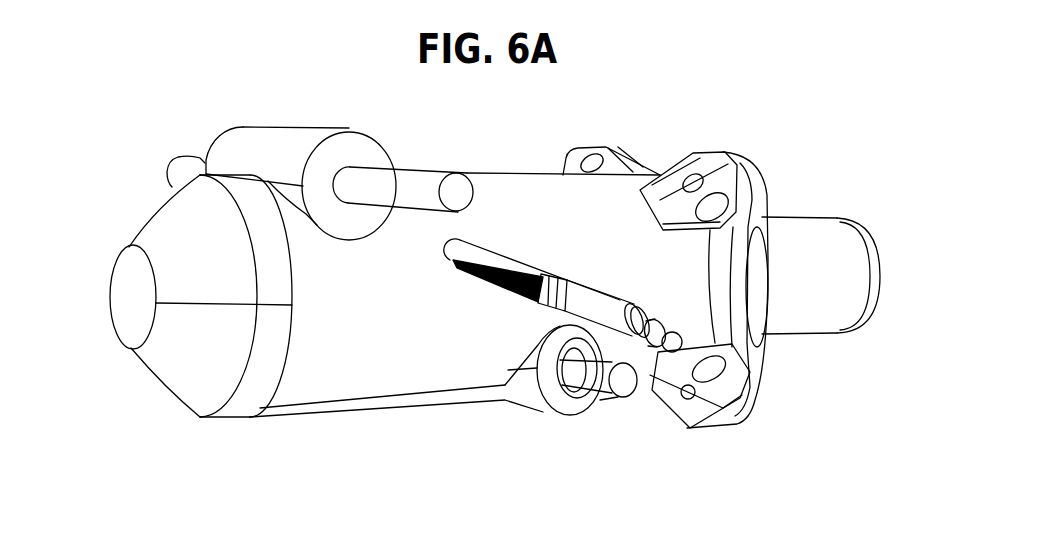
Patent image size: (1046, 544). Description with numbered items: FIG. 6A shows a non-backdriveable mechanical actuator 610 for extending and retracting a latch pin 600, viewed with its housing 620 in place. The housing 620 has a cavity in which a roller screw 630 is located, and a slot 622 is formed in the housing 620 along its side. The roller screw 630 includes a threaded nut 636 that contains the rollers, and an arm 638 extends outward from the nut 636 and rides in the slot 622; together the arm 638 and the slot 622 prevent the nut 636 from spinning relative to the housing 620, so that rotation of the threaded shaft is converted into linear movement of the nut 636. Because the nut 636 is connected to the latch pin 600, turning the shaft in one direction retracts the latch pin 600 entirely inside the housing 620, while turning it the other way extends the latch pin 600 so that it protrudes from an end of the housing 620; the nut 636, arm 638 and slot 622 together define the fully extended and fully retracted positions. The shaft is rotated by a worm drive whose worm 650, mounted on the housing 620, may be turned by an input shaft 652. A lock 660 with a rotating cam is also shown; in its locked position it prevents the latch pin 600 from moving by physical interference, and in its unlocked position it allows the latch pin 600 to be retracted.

The latch pin 600 is at (800, 217).
The non-backdriveable mechanical actuator 610 is at (782, 120).
The housing 620 is at (415, 403).
The slot 622 is at (497, 250).
The roller screw 630 is at (502, 290).
The threaded nut 636 is at (577, 297).
The arm 638 is at (690, 326).
The worm 650 is at (351, 222).
The input shaft 652 is at (412, 172).
The lock 660 is at (623, 397).